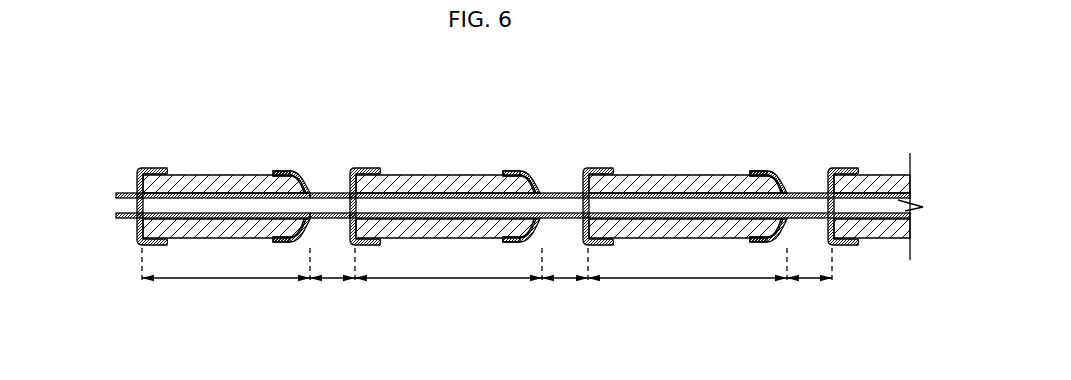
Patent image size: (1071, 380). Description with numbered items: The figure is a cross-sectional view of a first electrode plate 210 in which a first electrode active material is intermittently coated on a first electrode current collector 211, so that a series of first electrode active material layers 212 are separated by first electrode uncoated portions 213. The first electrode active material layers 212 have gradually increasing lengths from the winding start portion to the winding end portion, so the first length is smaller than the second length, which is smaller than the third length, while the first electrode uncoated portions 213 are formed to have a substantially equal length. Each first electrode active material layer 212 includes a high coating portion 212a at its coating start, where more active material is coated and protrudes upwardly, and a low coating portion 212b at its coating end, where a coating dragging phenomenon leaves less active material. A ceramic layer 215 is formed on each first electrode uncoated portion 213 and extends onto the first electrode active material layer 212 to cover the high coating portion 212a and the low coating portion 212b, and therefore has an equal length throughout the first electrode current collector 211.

The first electrode plate 210 is at (97, 89).
The first electrode current collector 211 is at (123, 205).
The first electrode active material layer 212 is at (206, 180).
The high coating portion 212a is at (142, 170).
The low coating portion 212b is at (264, 175).
The first electrode uncoated portion 213 is at (338, 203).
The ceramic layer 215 is at (274, 189).